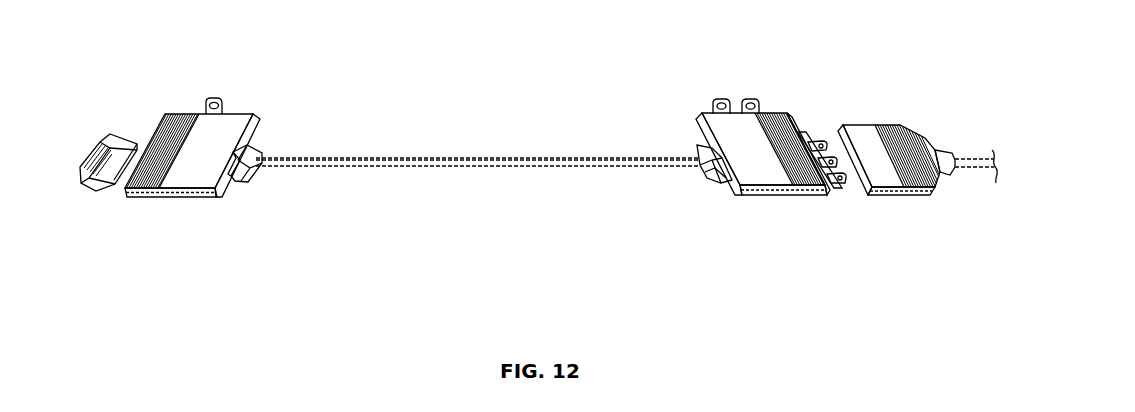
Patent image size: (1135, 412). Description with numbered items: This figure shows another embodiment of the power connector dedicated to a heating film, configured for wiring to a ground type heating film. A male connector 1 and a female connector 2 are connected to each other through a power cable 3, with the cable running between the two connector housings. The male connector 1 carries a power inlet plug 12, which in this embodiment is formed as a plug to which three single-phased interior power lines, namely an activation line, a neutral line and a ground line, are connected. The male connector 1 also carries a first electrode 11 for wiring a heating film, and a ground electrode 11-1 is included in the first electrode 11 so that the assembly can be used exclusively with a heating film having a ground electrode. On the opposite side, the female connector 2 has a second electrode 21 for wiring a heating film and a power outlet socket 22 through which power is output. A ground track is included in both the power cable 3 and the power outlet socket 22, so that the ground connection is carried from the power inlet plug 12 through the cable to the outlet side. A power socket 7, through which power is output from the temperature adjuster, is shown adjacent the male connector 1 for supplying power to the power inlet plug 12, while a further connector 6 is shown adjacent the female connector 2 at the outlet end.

The male connector 1 is at (763, 177).
The female connector 2 is at (188, 177).
The power cable 3 is at (463, 168).
The connector 6 is at (116, 137).
The power socket 7 is at (864, 133).
The first electrode 11 is at (718, 101).
The ground electrode 11-1 is at (749, 101).
The power inlet plug 12 is at (845, 186).
The second electrode 21 is at (213, 100).
The power outlet socket 22 is at (150, 140).